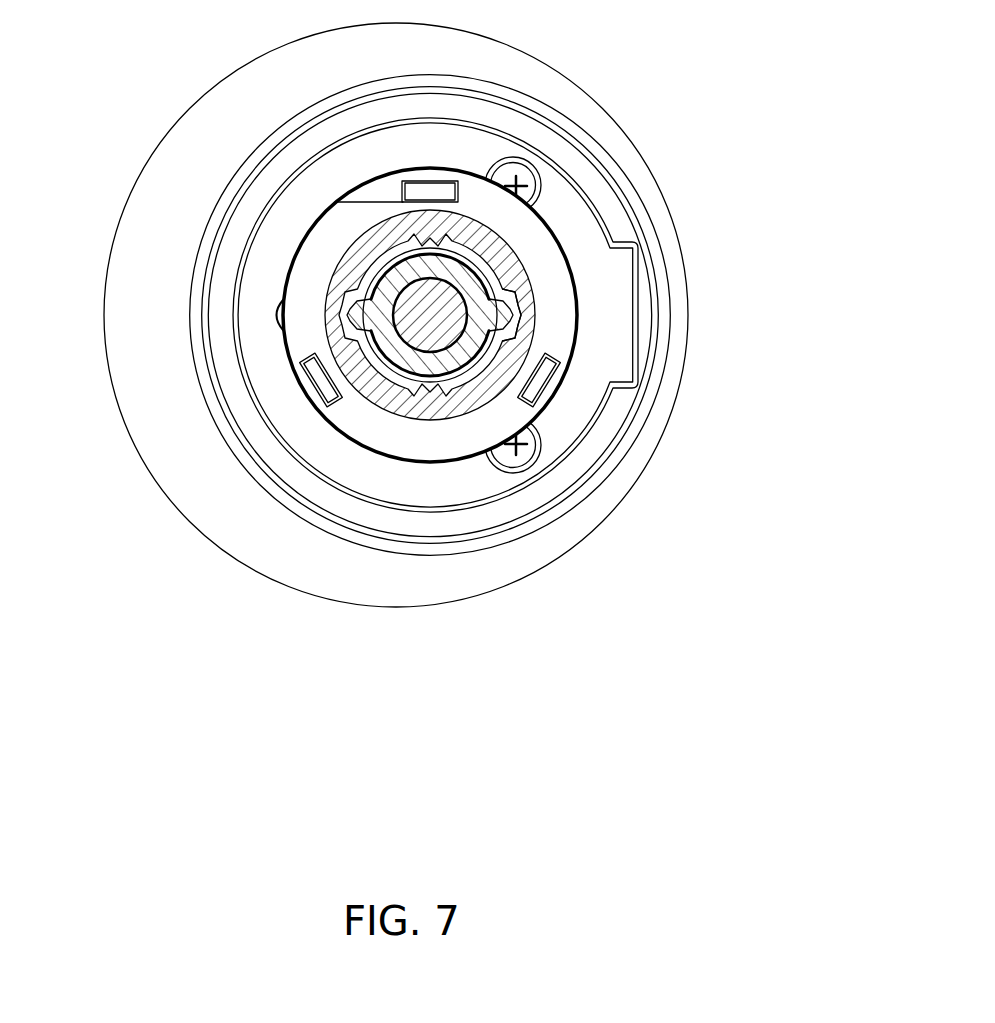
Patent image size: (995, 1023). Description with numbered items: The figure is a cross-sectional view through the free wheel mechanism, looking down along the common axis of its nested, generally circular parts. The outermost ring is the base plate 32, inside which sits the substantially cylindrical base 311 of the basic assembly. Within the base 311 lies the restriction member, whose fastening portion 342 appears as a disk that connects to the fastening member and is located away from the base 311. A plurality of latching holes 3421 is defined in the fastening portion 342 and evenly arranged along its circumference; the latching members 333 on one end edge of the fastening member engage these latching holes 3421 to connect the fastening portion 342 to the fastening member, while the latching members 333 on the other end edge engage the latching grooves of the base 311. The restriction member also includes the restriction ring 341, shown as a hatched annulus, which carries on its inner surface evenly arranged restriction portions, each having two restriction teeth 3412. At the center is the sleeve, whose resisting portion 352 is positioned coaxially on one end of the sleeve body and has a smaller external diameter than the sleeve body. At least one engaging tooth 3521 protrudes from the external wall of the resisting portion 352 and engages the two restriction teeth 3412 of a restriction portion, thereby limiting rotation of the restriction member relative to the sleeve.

The base plate 32 is at (328, 570).
The base 311 is at (432, 493).
The fastening portion 342 is at (367, 427).
The latching hole 3421 is at (335, 202).
The latching member 333 is at (433, 193).
The restriction ring 341 is at (343, 337).
The restriction teeth 3412 is at (508, 305).
The resisting portion 352 is at (392, 285).
The engaging tooth 3521 is at (508, 318).